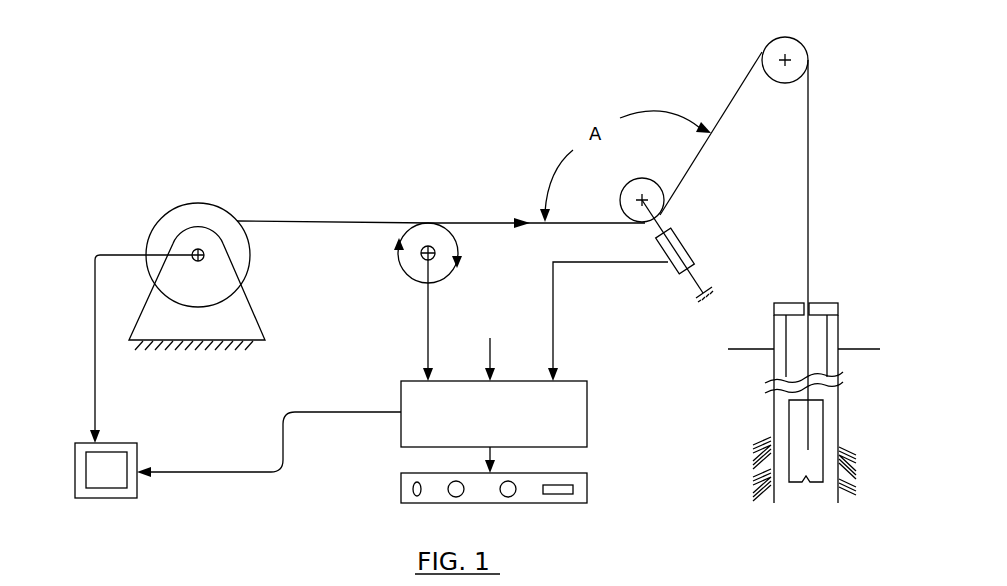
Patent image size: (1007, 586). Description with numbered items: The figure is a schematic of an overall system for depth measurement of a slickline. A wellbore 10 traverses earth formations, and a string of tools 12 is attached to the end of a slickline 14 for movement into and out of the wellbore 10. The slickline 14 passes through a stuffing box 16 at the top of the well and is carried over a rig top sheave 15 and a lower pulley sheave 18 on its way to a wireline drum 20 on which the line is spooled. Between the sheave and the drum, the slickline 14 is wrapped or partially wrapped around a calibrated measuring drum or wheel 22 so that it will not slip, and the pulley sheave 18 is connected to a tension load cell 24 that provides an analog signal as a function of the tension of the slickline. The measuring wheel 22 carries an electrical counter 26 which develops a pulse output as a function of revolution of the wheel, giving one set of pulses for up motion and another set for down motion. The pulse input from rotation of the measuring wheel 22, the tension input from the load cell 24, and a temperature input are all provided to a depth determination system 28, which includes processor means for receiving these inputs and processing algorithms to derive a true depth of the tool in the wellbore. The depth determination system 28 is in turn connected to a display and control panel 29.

The wellbore 10 is at (829, 501).
The string of tools 12 is at (827, 450).
The slickline 14 is at (808, 228).
The upper sheave 15 is at (770, 52).
The stuffing box 16 is at (810, 300).
The pulley sheave 18 is at (655, 198).
The wireline drum 20 is at (188, 213).
The calibrated measuring wheel 22 is at (431, 232).
The tension load cell 24 is at (668, 276).
The electrical counter 26 is at (425, 256).
The depth determination system 28 is at (587, 418).
The display and control panel 29 is at (587, 488).